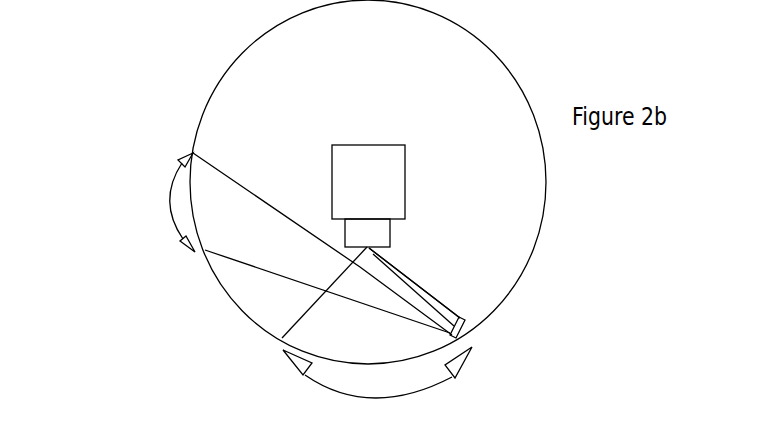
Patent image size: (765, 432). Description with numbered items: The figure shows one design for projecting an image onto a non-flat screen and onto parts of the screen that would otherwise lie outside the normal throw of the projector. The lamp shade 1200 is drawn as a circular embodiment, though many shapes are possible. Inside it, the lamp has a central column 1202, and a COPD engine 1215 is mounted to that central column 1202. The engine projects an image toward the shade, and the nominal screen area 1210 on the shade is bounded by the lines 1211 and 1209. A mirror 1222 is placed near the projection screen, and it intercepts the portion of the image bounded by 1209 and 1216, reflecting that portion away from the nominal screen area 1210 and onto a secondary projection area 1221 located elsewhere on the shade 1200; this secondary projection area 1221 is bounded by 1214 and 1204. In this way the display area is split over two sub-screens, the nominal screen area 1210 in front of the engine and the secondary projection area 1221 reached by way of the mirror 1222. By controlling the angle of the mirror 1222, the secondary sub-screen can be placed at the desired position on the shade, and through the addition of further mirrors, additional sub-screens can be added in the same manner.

The lamp shade 1200 is at (312, 182).
The central column 1202 is at (276, 118).
The boundary of secondary projection area 1204 is at (279, 224).
The boundary of reflected image portion 1209 is at (502, 283).
The nominal screen area 1210 is at (324, 384).
The boundary of nominal screen area 1211 is at (254, 301).
The boundary of secondary projection area 1214 is at (276, 291).
The COPD engine 1215 is at (493, 232).
The boundary of reflected image portion 1216 is at (501, 287).
The secondary projection area 1221 is at (111, 202).
The mirror 1222 is at (588, 336).